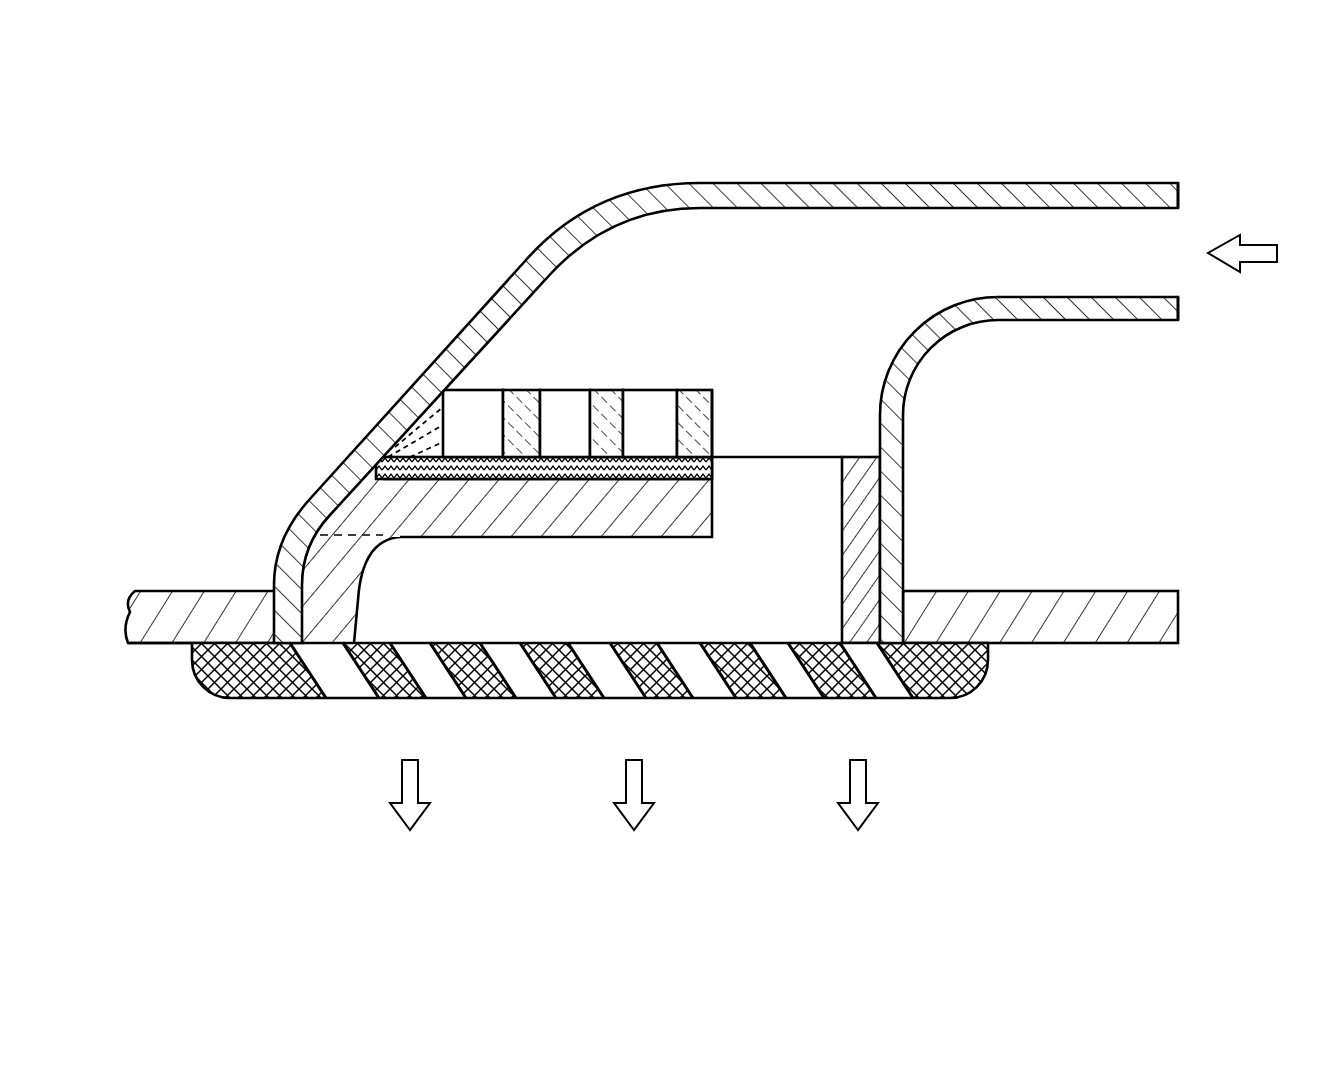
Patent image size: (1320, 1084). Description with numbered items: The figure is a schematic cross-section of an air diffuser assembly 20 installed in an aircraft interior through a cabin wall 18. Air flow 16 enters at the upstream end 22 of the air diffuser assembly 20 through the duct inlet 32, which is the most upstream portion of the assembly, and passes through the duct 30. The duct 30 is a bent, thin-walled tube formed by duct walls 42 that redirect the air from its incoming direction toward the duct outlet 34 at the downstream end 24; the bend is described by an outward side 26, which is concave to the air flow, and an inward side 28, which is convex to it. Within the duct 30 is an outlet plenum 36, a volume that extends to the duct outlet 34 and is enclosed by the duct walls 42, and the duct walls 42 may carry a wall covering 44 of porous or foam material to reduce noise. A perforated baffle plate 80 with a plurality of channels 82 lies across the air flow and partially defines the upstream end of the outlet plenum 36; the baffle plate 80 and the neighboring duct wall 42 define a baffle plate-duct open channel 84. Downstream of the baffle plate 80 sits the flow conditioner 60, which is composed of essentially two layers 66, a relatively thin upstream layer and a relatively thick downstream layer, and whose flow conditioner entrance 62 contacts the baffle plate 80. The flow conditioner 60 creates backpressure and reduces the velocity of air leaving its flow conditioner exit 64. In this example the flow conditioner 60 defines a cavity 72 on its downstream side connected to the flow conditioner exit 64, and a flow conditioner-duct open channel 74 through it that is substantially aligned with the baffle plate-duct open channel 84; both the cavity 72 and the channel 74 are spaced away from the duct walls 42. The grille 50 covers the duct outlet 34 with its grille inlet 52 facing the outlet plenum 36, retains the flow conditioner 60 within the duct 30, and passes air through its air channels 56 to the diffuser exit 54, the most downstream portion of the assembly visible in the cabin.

The air flow 16 is at (1257, 263).
The cabin wall 18 is at (1090, 645).
The air diffuser assembly 20 is at (333, 270).
The upstream end 22 is at (1125, 158).
The downstream end 24 is at (247, 577).
The outward side 26 is at (413, 377).
The inward side 28 is at (907, 445).
The duct 30 is at (453, 333).
The duct inlet 32 is at (1178, 223).
The duct outlet 34 is at (287, 643).
The outlet plenum 36 is at (427, 553).
The duct wall 42 is at (822, 210).
The wall covering 44 is at (357, 620).
The grille 50 is at (963, 692).
The grille inlet 52 is at (680, 643).
The diffuser exit 54 is at (722, 690).
The air channels 56 is at (415, 668).
The flow conditioner 60 is at (610, 537).
The flow conditioner entrance 62 is at (650, 457).
The flow conditioner exit 64 is at (508, 643).
The layers 66 is at (712, 522).
The cavity 72 is at (367, 570).
The flow conditioner-duct open channel 74 is at (842, 500).
The baffle plate 80 is at (610, 390).
The channels 82 is at (540, 420).
The baffle plate-duct open channel 84 is at (880, 433).